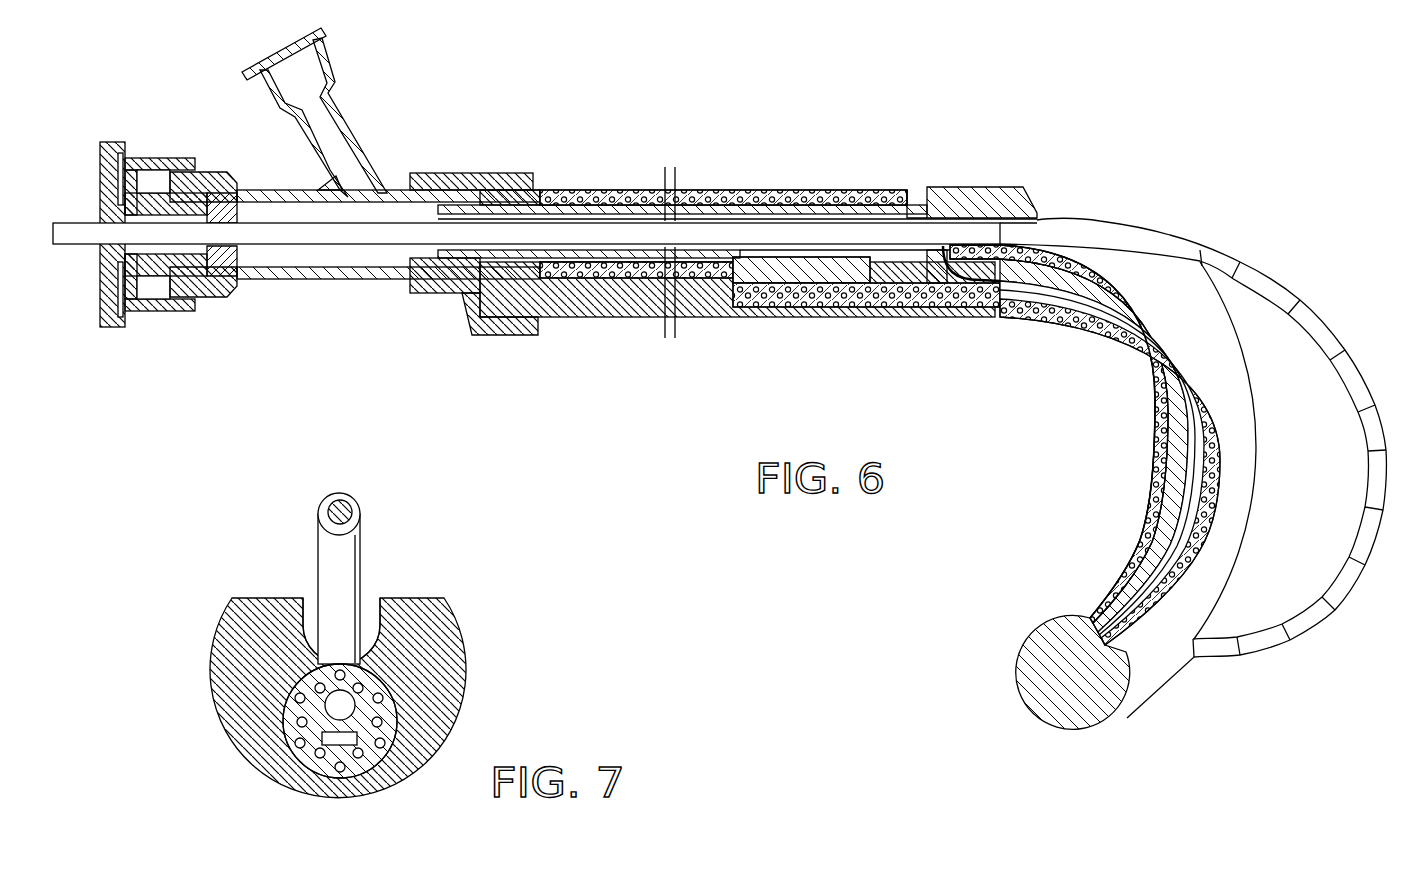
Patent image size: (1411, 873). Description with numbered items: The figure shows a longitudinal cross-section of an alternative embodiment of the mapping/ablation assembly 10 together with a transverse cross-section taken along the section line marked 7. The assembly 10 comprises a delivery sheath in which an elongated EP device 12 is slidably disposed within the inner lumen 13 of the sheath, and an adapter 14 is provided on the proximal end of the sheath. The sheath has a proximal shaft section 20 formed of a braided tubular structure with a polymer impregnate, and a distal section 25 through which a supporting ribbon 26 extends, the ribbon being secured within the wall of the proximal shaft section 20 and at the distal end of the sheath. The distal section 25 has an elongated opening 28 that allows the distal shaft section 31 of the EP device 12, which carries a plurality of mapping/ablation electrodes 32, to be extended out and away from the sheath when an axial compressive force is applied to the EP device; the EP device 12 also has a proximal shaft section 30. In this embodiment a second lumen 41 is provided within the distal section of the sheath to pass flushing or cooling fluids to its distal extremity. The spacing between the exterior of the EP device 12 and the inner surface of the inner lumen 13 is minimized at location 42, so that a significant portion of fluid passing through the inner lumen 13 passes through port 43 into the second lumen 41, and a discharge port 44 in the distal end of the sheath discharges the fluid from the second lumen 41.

In FIG. 6, the mapping/ablation assembly 10 is at (727, 378).
In FIG. 6, the EP device 12 is at (1140, 228).
In FIG. 7, the EP device 12 is at (363, 556).
In FIG. 6, the inner lumen 13 is at (748, 220).
In FIG. 6, the adapter 14 is at (320, 281).
In FIG. 6, the proximal shaft section 20 is at (635, 320).
In FIG. 6, the distal section 25 is at (1150, 452).
In FIG. 7, the distal section 25 is at (441, 672).
In FIG. 6, the supporting ribbon 26 is at (1188, 462).
In FIG. 7, the supporting ribbon 26 is at (337, 740).
In FIG. 6, the elongated opening 28 is at (1252, 436).
In FIG. 7, the elongated opening 28 is at (312, 612).
In FIG. 6, the proximal shaft section 30 is at (528, 232).
In FIG. 6, the distal shaft section 31 is at (1346, 324).
In FIG. 6, the mapping/ablation electrodes 32 is at (1268, 270).
In FIG. 6, the second lumen 41 is at (1192, 408).
In FIG. 7, the second lumen 41 is at (332, 706).
In FIG. 6, the location 42 is at (985, 192).
In FIG. 6, the port 43 is at (945, 250).
In FIG. 6, the discharge port 44 is at (1138, 688).
In FIG. 6, the section line 7- 7 is at (1230, 243).